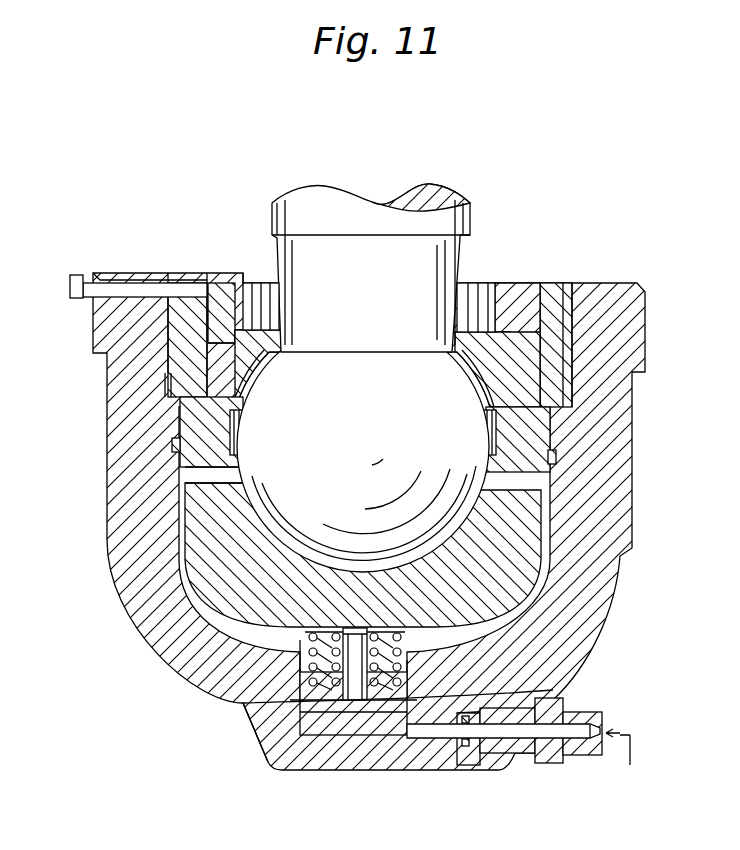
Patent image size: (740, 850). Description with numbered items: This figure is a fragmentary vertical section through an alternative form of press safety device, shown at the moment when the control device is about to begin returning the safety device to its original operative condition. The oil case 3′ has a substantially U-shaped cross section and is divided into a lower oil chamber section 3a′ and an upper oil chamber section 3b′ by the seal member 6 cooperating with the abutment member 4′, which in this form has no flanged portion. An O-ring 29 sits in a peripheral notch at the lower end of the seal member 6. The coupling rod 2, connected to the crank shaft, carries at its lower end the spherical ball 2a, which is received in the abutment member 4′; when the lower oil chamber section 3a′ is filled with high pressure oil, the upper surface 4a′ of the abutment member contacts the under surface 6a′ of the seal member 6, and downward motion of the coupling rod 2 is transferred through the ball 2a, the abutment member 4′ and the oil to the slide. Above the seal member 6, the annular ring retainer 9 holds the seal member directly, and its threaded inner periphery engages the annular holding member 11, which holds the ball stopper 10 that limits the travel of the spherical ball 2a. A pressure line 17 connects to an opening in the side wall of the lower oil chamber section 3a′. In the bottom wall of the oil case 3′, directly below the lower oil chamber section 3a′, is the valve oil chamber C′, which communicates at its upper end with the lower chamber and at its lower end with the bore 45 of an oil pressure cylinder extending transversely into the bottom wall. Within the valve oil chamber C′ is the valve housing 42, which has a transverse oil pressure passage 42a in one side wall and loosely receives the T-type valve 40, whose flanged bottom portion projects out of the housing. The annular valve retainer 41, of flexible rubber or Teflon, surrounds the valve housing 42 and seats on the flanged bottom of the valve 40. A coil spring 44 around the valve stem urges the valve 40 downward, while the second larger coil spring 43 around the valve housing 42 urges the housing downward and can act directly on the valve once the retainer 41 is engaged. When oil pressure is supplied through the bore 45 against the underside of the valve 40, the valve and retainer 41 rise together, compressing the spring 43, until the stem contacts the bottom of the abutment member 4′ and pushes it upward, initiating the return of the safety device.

The coupling rod 2 is at (348, 200).
The annular holding member 11 is at (519, 292).
The annular ring retainer 9 is at (548, 302).
The ball stopper 10 is at (522, 373).
The seal member 6 is at (553, 435).
The under surface of seal member 6a′ is at (545, 480).
The upper surface of abutment member 4a′ is at (503, 483).
The abutment member 4′ is at (530, 572).
The lower oil chamber section 3a′ is at (527, 615).
The transverse oil pressure passage 42a is at (495, 700).
The upper oil chamber section 3b′ is at (231, 430).
The O-ring 29 is at (172, 447).
The spherical ball 2a is at (180, 470).
The oil case 3′ is at (130, 618).
The valve oil chamber C′ is at (310, 658).
The annular valve retainer 41 is at (313, 660).
The T-type valve 40 is at (267, 740).
The valve housing 42 is at (320, 695).
The coil spring 44 is at (372, 688).
The second larger coil spring 43 is at (407, 670).
The bore of oil pressure cylinder 45 is at (494, 728).
The pressure line 17 is at (631, 759).